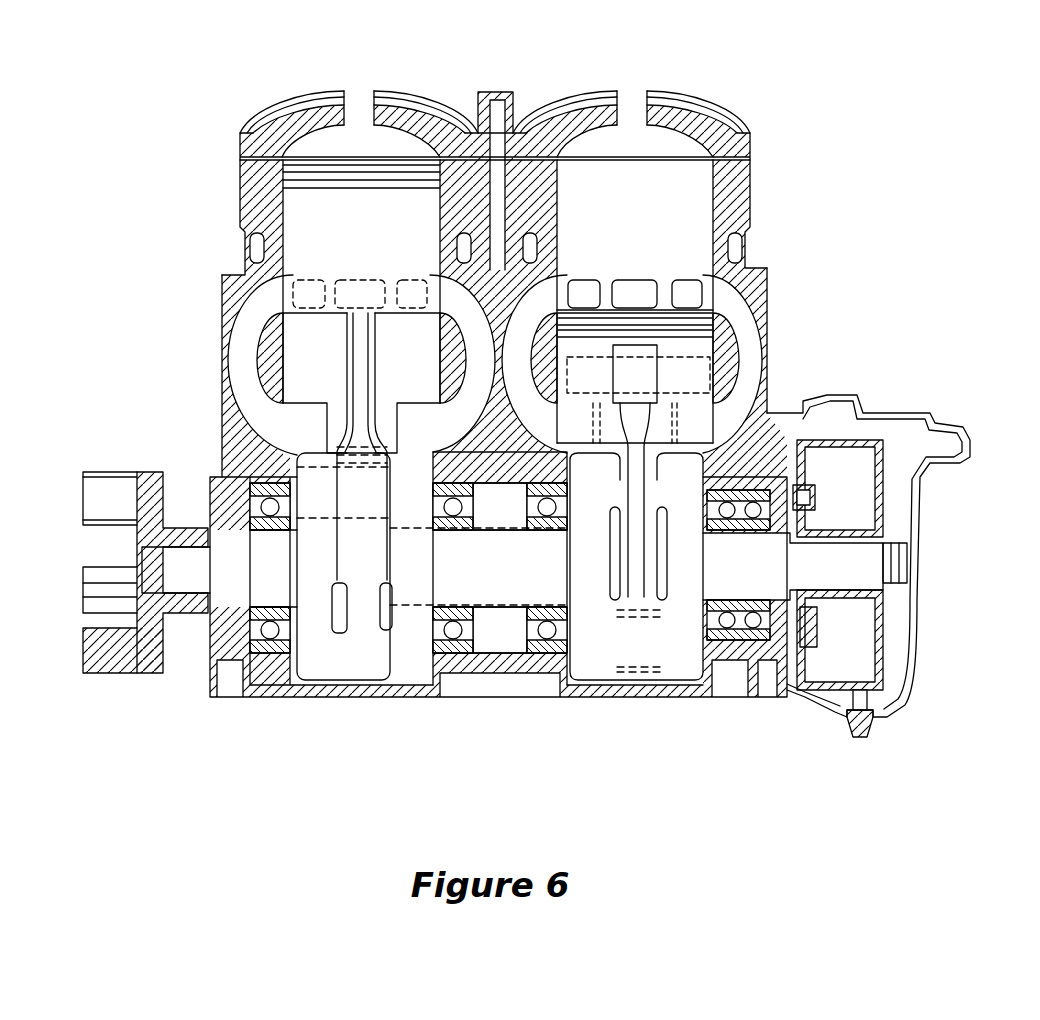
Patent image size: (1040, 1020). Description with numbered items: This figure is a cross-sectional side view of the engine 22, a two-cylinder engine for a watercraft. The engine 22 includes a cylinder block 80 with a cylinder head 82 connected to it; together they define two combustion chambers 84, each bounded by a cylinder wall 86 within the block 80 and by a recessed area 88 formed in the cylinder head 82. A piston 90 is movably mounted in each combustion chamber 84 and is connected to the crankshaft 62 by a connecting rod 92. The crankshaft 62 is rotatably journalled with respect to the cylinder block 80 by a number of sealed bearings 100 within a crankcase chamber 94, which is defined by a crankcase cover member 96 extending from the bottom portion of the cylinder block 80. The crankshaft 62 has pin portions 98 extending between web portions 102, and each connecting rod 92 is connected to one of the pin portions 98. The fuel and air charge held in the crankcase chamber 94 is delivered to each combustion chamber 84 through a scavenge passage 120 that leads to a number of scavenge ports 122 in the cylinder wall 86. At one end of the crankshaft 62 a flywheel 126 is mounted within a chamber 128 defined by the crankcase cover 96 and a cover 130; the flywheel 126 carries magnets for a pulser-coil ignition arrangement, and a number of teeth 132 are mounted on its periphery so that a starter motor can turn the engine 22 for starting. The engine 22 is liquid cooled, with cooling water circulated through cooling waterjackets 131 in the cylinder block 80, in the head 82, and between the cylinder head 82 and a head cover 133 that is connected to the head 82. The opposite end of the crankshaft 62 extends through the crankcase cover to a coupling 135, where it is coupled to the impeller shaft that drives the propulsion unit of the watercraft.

The engine 22 is at (792, 76).
The crankshaft 62 is at (498, 642).
The cylinder block 80 is at (222, 296).
The cylinder head 82 is at (240, 150).
The combustion chamber 84 is at (576, 188).
The cylinder wall 86 is at (440, 243).
The recessed area 88 is at (390, 140).
The piston 90 is at (330, 258).
The connecting rod 92 is at (372, 384).
The crankcase chamber 94 is at (615, 575).
The crankcase cover member 96 is at (222, 437).
The pin portion 98 is at (345, 540).
The sealed bearing 100 is at (265, 660).
The web portion 102 is at (320, 665).
The scavenge passage 120 is at (245, 348).
The scavenge port 122 is at (677, 273).
The flywheel 126 is at (877, 714).
The chamber 128 is at (900, 680).
The cover 130 is at (920, 627).
The cooling waterjacket 131 is at (272, 118).
The teeth 132 is at (845, 712).
The head cover 133 is at (300, 94).
The coupling 135 is at (105, 677).